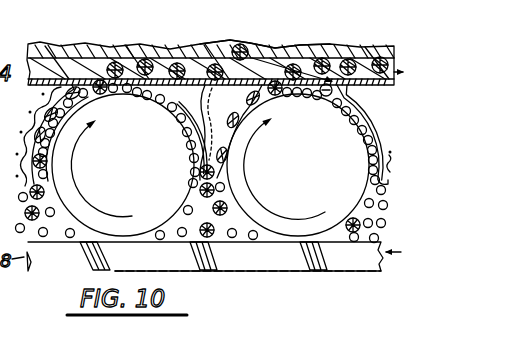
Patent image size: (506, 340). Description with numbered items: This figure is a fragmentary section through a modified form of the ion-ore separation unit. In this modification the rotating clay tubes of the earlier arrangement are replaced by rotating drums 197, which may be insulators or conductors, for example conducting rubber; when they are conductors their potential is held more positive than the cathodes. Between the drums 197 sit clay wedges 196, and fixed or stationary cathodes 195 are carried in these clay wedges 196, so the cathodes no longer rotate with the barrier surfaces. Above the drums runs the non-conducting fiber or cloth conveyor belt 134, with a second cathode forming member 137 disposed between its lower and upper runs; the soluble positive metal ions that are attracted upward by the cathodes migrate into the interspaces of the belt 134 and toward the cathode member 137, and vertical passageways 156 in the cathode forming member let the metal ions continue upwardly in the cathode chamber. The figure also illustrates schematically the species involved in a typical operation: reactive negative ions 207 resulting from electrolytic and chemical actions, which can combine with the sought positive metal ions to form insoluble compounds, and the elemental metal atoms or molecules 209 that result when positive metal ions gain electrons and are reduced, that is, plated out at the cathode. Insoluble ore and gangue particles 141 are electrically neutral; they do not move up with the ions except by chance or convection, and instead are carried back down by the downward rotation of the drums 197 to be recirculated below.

The conveyor belt 134 is at (75, 65).
The vertical passageways 156 is at (205, 50).
The second cathode forming member 137 is at (270, 46).
The reactive negative ions 207 is at (338, 60).
The elemental atoms or molecules 209 is at (357, 63).
The clay wedges 196 is at (355, 103).
The fixed cathodes 195 is at (224, 108).
The insoluble ore and gangue particles 141 is at (238, 253).
The rotating drums 197 is at (128, 224).